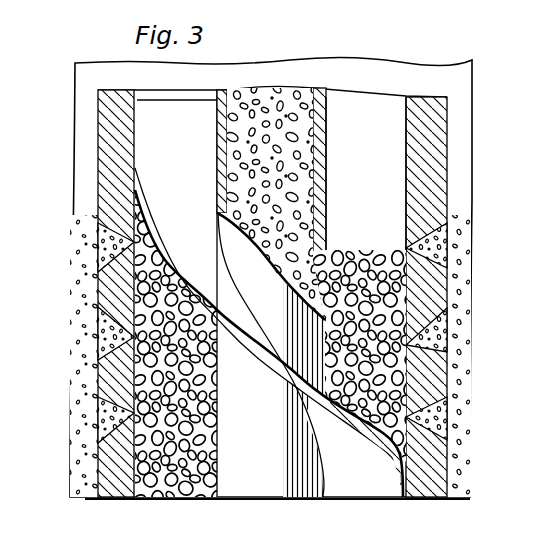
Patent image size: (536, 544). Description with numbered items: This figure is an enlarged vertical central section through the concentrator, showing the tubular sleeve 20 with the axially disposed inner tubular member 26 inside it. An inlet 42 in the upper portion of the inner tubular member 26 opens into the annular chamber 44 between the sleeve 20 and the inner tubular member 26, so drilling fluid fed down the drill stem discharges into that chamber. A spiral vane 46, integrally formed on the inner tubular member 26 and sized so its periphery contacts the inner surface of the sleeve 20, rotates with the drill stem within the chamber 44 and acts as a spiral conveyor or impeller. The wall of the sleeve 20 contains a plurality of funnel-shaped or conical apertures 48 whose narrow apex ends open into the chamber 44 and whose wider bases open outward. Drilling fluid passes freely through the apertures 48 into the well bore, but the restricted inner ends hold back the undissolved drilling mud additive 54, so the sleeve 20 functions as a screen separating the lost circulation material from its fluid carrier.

The sleeve 20 is at (115, 137).
The inner tubular member 26 is at (232, 473).
The inlet 42 is at (315, 262).
The annular chamber 44 is at (349, 113).
The spiral vane 46 is at (353, 463).
The apertures 48 is at (132, 327).
The drilling mud additive 54 is at (297, 153).